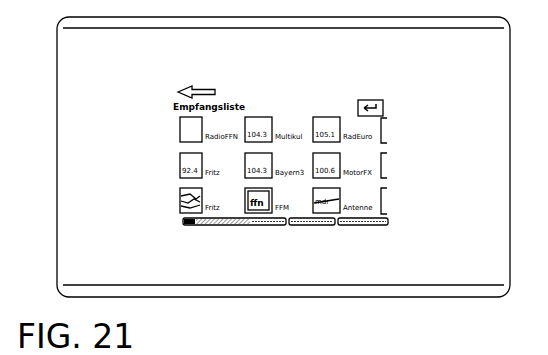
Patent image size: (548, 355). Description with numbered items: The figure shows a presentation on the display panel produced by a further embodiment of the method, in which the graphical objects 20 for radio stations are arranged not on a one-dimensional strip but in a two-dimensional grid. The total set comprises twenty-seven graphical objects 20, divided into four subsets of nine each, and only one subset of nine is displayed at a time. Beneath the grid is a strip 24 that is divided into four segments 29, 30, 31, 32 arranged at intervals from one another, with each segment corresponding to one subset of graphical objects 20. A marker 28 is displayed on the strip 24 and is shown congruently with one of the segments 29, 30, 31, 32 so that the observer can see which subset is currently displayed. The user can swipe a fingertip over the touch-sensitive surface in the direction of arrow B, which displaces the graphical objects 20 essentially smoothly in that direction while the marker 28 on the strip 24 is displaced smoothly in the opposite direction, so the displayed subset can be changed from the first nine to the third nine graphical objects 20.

The arrow B is at (202, 90).
The graphical object 20 is at (183, 125).
The strip 24 is at (252, 251).
The marker 28 is at (227, 224).
The segment 29 is at (193, 223).
The segment 30 is at (263, 226).
The segment 31 is at (313, 226).
The segment 32 is at (362, 226).